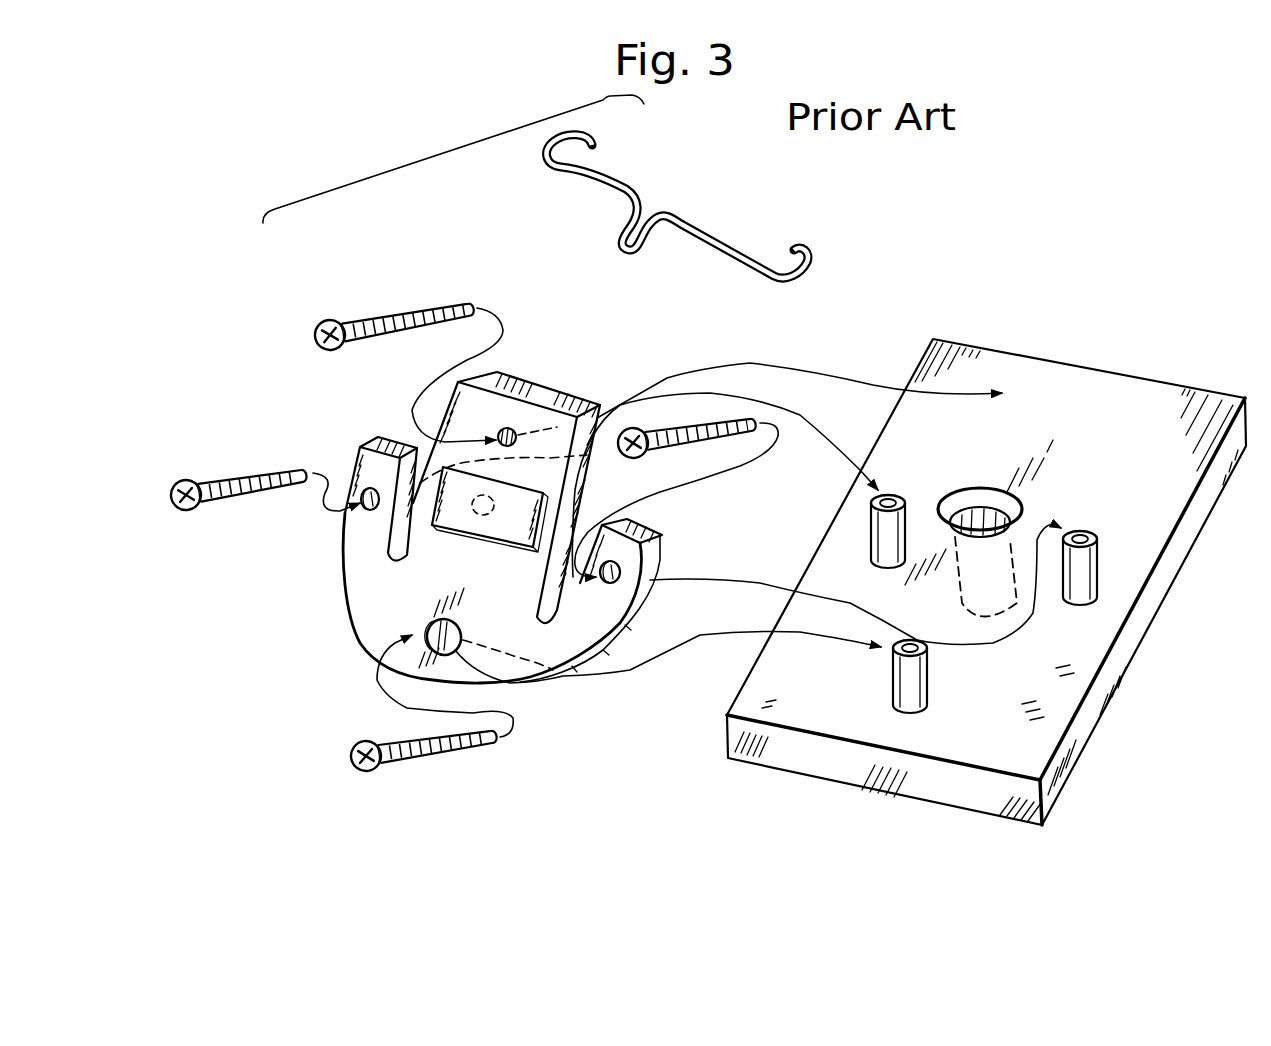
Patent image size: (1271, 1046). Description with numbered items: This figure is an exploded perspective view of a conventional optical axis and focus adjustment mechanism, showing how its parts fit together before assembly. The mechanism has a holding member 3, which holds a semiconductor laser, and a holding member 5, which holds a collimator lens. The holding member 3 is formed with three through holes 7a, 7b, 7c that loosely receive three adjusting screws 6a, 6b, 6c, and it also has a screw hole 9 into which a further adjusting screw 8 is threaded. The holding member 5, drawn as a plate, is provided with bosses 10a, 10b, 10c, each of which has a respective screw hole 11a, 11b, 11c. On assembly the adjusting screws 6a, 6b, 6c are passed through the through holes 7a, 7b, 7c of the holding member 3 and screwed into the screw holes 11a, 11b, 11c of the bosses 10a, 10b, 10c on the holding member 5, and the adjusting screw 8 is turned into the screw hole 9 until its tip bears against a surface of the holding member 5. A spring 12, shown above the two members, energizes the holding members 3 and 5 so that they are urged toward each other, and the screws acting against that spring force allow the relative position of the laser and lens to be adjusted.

The holding member 3 is at (504, 542).
The holding member 5 is at (850, 568).
The adjusting screw 6a is at (243, 505).
The adjusting screw 6b is at (434, 768).
The adjusting screw 6c is at (681, 447).
The through hole 7a is at (356, 450).
The through hole 7b is at (448, 656).
The through hole 7c is at (652, 529).
The adjusting screw 8 is at (401, 312).
The screw hole 9 is at (507, 428).
The boss 10a is at (896, 498).
The boss 10b is at (922, 684).
The boss 10c is at (1097, 545).
The screw hole 11a is at (787, 470).
The screw hole 11b is at (897, 667).
The screw hole 11c is at (1075, 532).
The spring 12 is at (726, 246).